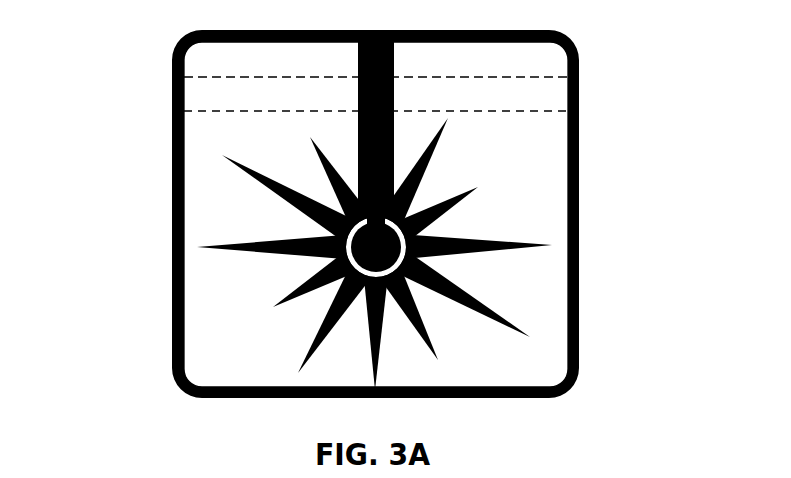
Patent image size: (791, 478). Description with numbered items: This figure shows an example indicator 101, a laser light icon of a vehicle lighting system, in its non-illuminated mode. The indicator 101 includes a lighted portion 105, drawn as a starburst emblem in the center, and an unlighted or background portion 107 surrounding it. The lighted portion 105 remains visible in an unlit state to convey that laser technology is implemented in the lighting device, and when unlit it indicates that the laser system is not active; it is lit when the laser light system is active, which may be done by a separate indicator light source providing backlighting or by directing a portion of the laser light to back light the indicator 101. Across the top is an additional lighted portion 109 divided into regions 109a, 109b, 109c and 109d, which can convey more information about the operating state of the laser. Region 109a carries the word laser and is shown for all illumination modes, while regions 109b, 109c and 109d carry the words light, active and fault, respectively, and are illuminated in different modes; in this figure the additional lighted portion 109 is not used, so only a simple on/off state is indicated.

The indicator 101 is at (626, 97).
The lighted portion 105 is at (495, 263).
The background portion 107 is at (195, 325).
The additional lighted portion 109 is at (305, 97).
The region 109a is at (280, 62).
The region 109b is at (472, 62).
The region 109c is at (280, 97).
The region 109d is at (472, 97).